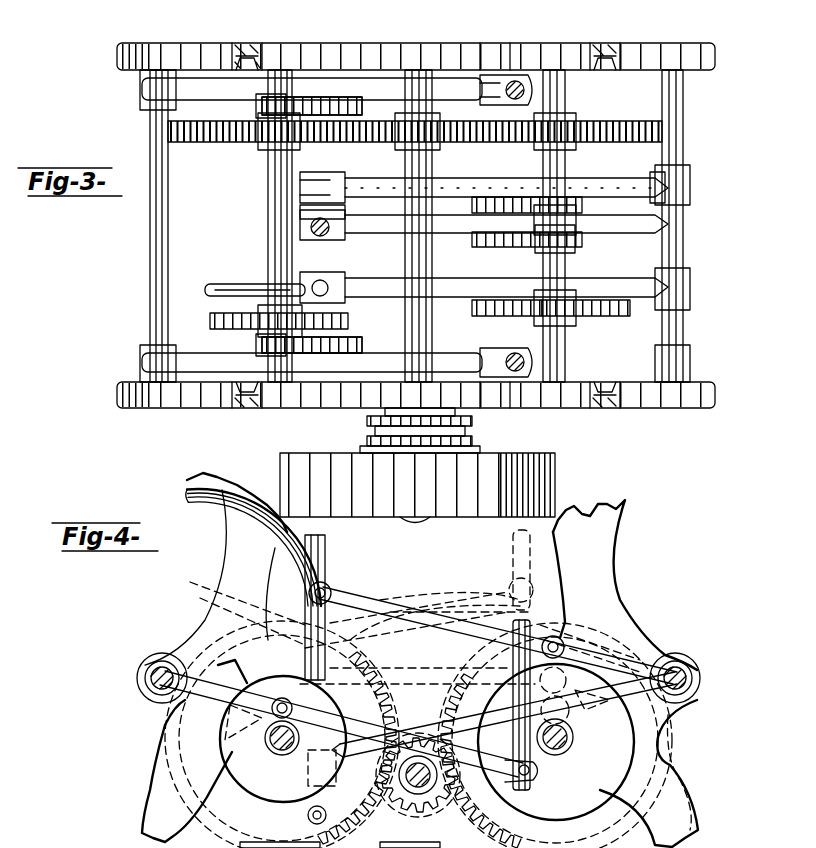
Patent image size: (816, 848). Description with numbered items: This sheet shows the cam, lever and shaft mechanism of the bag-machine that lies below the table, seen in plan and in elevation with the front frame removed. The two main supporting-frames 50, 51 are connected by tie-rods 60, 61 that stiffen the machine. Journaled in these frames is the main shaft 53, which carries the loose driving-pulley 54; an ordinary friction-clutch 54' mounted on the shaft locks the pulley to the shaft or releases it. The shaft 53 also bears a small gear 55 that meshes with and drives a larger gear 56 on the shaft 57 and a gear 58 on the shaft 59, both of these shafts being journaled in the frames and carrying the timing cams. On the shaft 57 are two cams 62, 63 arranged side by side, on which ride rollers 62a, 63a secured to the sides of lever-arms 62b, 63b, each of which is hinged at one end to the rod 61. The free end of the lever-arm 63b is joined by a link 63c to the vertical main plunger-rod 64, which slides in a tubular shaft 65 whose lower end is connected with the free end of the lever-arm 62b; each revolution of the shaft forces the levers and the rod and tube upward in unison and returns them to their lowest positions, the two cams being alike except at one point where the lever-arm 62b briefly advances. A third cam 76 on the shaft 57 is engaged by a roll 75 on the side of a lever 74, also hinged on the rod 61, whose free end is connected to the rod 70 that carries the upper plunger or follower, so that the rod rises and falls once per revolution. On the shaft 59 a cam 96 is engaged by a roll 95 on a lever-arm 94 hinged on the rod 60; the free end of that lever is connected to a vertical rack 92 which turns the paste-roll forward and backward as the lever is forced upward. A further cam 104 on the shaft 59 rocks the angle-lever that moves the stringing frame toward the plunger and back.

In FIG. 3, the main supporting-frame 50 is at (200, 404).
In FIG. 3, the main supporting-frame 51 is at (188, 58).
In FIG. 4, the main supporting-frame 51 is at (420, 660).
In FIG. 3, the shaft 53 is at (425, 265).
In FIG. 4, the shaft 53 is at (412, 790).
In FIG. 3, the driving-pulley 54 is at (417, 488).
In FIG. 3, the friction-clutch 54' is at (445, 430).
In FIG. 3, the small gear 55 is at (398, 143).
In FIG. 4, the small gear 55 is at (430, 798).
In FIG. 3, the larger gear 56 is at (600, 142).
In FIG. 3, the shaft 57 is at (560, 362).
In FIG. 4, the shaft 57 is at (575, 737).
In FIG. 3, the gear 58 is at (235, 142).
In FIG. 4, the shaft 59 is at (266, 738).
In FIG. 3, the rod 60 is at (152, 216).
In FIG. 4, the rod 60 is at (144, 678).
In FIG. 3, the rod 61 is at (672, 153).
In FIG. 4, the rod 61 is at (690, 678).
In FIG. 3, the cam 62 is at (525, 240).
In FIG. 3, the roller 62a is at (576, 242).
In FIG. 3, the lever-arm 62b is at (382, 222).
In FIG. 4, the lever-arm 62b is at (418, 726).
In FIG. 3, the cam 63 is at (505, 205).
In FIG. 3, the roller 63a is at (598, 180).
In FIG. 3, the lever-arm 63b is at (460, 176).
In FIG. 3, the link 63c is at (340, 205).
In FIG. 3, the vertical rod 64 is at (322, 236).
In FIG. 4, the vertical rod 64 is at (306, 814).
In FIG. 4, the tubular shaft 65 is at (326, 562).
In FIG. 3, the rod 70 is at (215, 280).
In FIG. 4, the rod 70 is at (230, 508).
In FIG. 3, the lever 74 is at (372, 296).
In FIG. 4, the lever 74 is at (378, 604).
In FIG. 3, the roll 75 is at (575, 312).
In FIG. 4, the roll 75 is at (556, 742).
In FIG. 3, the cam 76 is at (490, 310).
In FIG. 3, the vertical rack 92 is at (514, 80).
In FIG. 4, the vertical rack 92 is at (530, 630).
In FIG. 3, the lever-arm 94 is at (375, 362).
In FIG. 4, the lever-arm 94 is at (414, 760).
In FIG. 3, the roll 95 is at (256, 106).
In FIG. 3, the cam 96 is at (325, 108).
In FIG. 4, the cam 96 is at (282, 734).
In FIG. 3, the cam 104 is at (210, 318).
In FIG. 4, the cam 104 is at (282, 731).